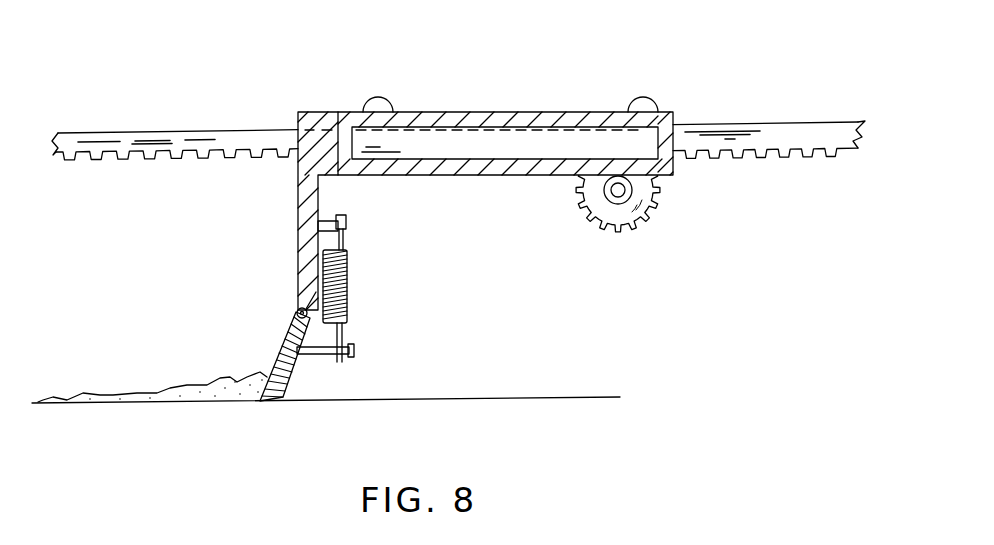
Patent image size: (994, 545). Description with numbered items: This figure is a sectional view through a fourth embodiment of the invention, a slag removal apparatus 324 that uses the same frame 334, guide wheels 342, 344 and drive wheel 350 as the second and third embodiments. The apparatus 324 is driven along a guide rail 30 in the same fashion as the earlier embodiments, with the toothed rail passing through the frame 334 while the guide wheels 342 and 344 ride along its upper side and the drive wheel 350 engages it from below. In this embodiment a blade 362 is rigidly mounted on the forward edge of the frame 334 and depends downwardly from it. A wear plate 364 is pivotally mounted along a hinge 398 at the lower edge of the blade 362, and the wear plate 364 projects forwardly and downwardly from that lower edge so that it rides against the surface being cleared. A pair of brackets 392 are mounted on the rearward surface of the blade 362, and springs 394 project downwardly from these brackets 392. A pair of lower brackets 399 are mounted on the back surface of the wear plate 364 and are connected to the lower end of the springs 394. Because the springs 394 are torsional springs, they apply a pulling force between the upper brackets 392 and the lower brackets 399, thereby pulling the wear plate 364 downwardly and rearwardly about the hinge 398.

The guide rail 30 is at (141, 138).
The slag removal apparatus 324 is at (579, 100).
The frame 334 is at (481, 110).
The guide wheel 342 is at (651, 100).
The guide wheel 344 is at (378, 97).
The drive wheel 350 is at (633, 219).
The blade 362 is at (309, 238).
The wear plate 364 is at (280, 352).
The bracket 392 is at (349, 223).
The spring 394 is at (348, 283).
The hinge 398 is at (297, 312).
The lower bracket 399 is at (350, 349).